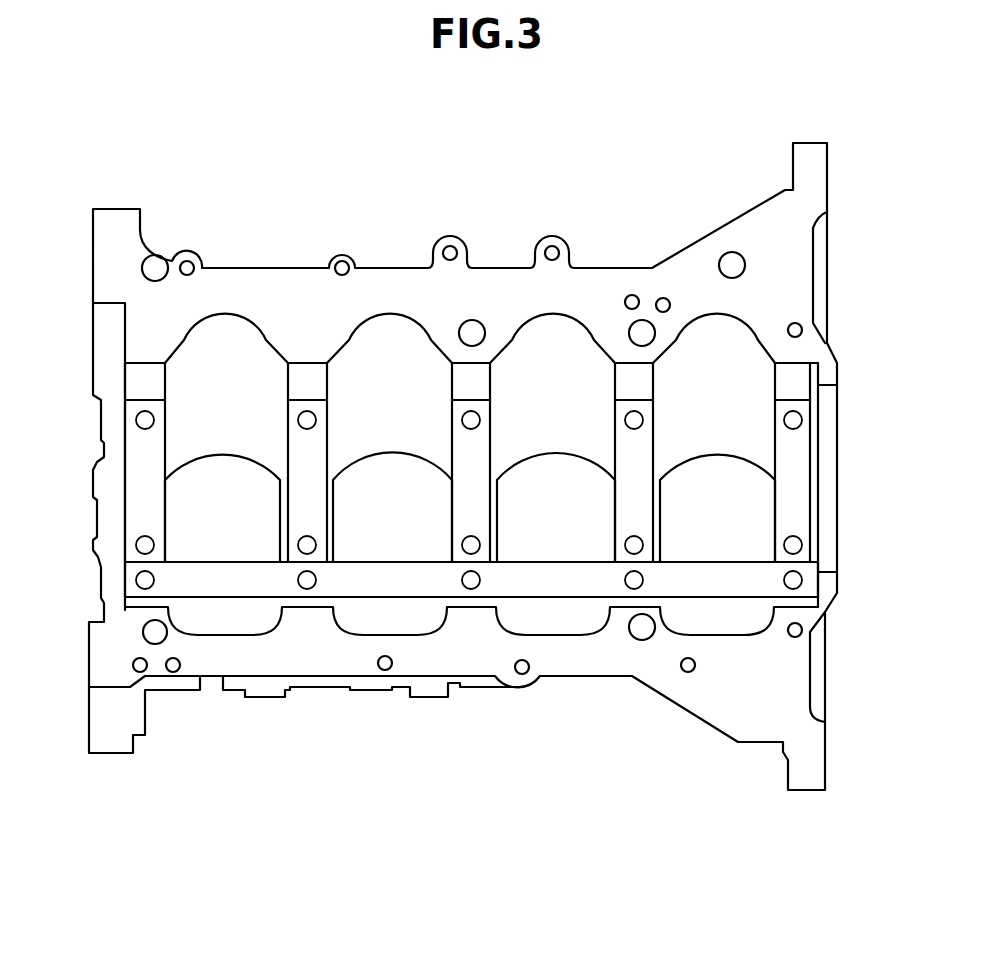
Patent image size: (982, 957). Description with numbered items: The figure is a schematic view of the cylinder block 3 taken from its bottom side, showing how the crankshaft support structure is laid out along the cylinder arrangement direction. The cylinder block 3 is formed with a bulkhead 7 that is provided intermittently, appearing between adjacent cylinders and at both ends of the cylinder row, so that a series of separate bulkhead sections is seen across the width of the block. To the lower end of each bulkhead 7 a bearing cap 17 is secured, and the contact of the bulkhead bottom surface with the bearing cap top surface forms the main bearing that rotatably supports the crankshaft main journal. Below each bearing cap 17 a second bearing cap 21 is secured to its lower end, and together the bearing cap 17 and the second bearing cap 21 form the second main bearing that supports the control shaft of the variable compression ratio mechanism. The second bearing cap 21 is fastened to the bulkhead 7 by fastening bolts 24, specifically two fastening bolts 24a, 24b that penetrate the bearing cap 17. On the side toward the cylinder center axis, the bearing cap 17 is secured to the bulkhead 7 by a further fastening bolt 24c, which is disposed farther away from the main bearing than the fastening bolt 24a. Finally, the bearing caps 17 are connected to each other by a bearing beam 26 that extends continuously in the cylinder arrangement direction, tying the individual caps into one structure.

The cylinder block 3 is at (237, 283).
The bulkhead 7 is at (360, 405).
The bearing cap 17 is at (305, 385).
The second bearing cap 21 is at (133, 503).
The fastening bolts 24 is at (432, 585).
The fastening bolt 24a is at (307, 545).
The fastening bolt 24b is at (307, 420).
The fastening bolt 24c is at (140, 588).
The bearing beam 26 is at (205, 583).